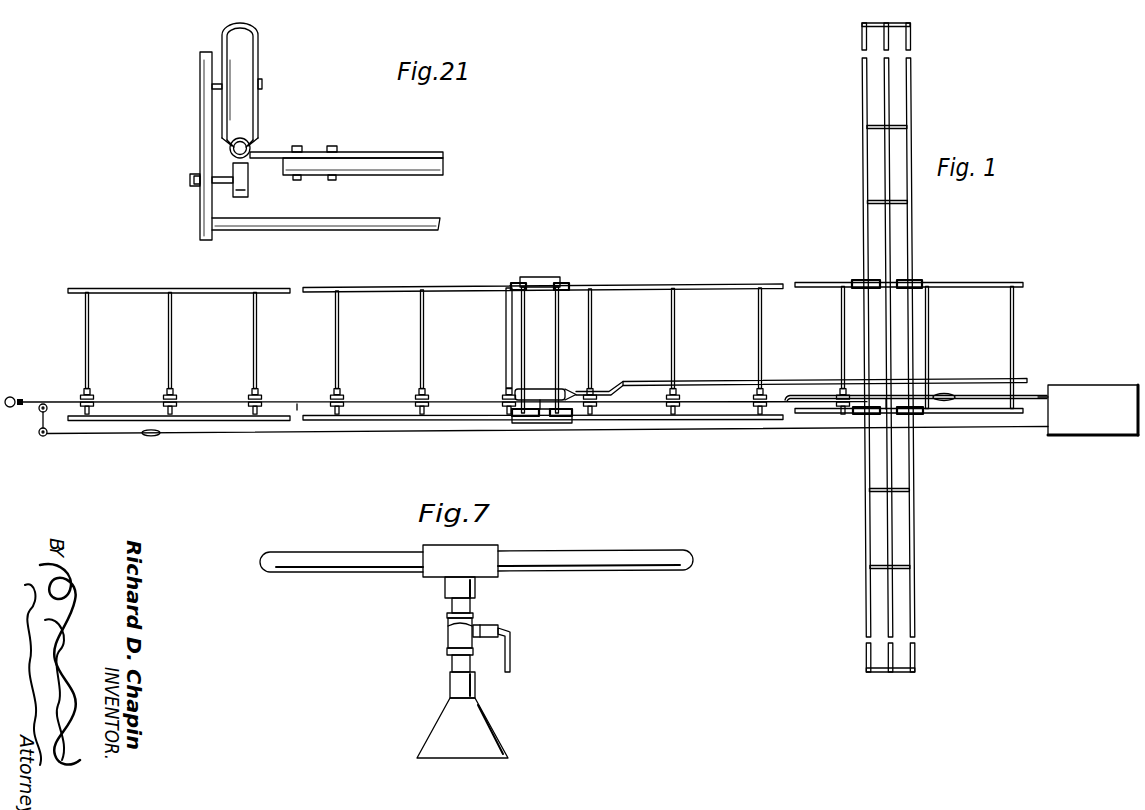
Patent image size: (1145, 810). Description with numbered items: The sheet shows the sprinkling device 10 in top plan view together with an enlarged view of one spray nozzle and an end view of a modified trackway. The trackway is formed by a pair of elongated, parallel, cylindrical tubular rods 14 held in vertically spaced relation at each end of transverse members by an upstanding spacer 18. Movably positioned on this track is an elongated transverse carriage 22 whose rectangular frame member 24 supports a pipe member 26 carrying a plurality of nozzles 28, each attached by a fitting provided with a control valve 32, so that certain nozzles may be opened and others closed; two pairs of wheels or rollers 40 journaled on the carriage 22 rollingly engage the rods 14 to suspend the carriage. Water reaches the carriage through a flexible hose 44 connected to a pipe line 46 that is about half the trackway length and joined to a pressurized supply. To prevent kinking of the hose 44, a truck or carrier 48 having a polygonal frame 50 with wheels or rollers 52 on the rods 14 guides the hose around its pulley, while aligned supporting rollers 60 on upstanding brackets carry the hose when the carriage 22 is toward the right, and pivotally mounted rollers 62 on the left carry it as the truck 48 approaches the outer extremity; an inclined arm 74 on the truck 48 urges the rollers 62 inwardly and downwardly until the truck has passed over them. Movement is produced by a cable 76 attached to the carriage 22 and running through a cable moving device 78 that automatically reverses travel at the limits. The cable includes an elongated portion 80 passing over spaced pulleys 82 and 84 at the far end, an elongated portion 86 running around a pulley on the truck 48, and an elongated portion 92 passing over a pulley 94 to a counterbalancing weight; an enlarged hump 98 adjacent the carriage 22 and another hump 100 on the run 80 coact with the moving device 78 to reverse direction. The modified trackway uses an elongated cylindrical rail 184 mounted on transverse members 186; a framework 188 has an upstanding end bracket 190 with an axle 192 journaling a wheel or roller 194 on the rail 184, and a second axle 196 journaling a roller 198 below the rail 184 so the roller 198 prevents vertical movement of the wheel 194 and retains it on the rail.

In FIG. 1, the sprinkling device 10 is at (714, 274).
In FIG. 1, the tubular rods 14 is at (218, 422).
In FIG. 1, the upstanding spacer 18 is at (760, 300).
In FIG. 1, the carriage 22 is at (875, 362).
In FIG. 1, the rectangular frame member 24 is at (917, 656).
In FIG. 1, the pipe member 26 is at (889, 257).
In FIG. 7, the pipe member 26 is at (678, 546).
In FIG. 7, the nozzles 28 is at (490, 737).
In FIG. 7, the control valve 32 is at (455, 634).
In FIG. 1, the wheels or rollers 40 is at (909, 282).
In FIG. 1, the flexible hose 44 is at (710, 382).
In FIG. 1, the pipe line 46 is at (1025, 381).
In FIG. 1, the truck or carrier 48 is at (561, 274).
In FIG. 1, the frame 50 is at (518, 308).
In FIG. 1, the wheels or rollers 52 is at (520, 283).
In FIG. 1, the supporting roller 60 is at (767, 392).
In FIG. 1, the rollers 62 is at (258, 396).
In FIG. 1, the inclined arm 74 is at (528, 390).
In FIG. 1, the cable 76 is at (1037, 396).
In FIG. 1, the cable moving device 78 is at (1087, 441).
In FIG. 1, the elongated cable portion 80 is at (320, 434).
In FIG. 1, the pulley 82 is at (42, 437).
In FIG. 1, the pulley 84 is at (40, 412).
In FIG. 1, the elongated cable portion 86 is at (297, 405).
In FIG. 1, the elongated cable portion 92 is at (190, 398).
In FIG. 1, the pulley 94 is at (18, 399).
In FIG. 1, the enlarged member or hump 98 is at (945, 394).
In FIG. 1, the hump 100 is at (152, 436).
In FIG. 21, the cylindrical rail 184 is at (258, 145).
In FIG. 21, the transverse members 186 is at (370, 157).
In FIG. 21, the framework 188 is at (377, 222).
In FIG. 21, the end bracket 190 is at (207, 121).
In FIG. 21, the axle 192 is at (215, 87).
In FIG. 21, the wheel or roller 194 is at (243, 74).
In FIG. 21, the axle 196 is at (220, 181).
In FIG. 21, the roller 198 is at (250, 192).